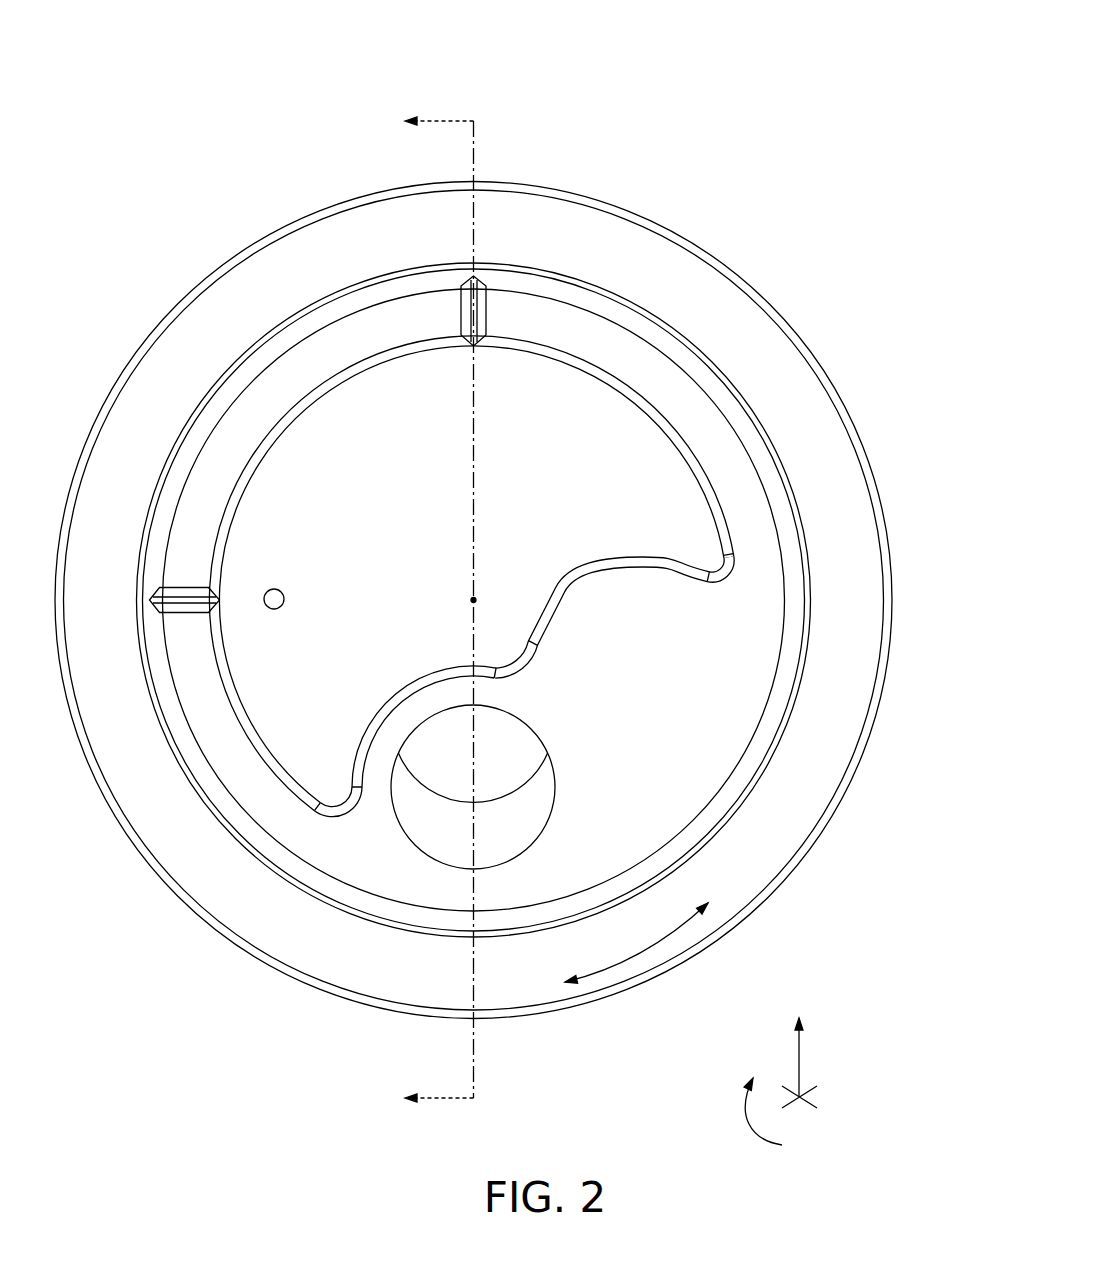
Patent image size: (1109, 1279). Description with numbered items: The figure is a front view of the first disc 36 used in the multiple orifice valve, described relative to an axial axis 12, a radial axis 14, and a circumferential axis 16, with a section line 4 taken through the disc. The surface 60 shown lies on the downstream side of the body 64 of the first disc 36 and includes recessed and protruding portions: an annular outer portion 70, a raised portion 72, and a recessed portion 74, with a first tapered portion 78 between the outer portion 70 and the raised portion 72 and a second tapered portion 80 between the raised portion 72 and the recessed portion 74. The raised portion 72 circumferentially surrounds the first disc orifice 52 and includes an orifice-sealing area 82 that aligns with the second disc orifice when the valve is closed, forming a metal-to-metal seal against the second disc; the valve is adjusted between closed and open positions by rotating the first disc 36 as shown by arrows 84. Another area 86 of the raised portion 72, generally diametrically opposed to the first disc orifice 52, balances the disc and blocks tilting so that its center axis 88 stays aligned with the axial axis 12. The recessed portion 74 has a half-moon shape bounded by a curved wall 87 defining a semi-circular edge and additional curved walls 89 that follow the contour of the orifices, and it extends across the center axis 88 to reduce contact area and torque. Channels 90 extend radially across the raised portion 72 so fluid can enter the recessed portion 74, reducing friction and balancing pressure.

The section line 4- 4 is at (427, 611).
The axial axis 12 is at (812, 1107).
The radial axis 14 is at (800, 1062).
The circumferential axis 16 is at (747, 1128).
The first disc 36 is at (778, 55).
The first disc orifice 52 is at (473, 787).
The surface 60 is at (748, 117).
The body 64 is at (768, 302).
The outer portion 70 is at (822, 407).
The raised portion 72 is at (750, 646).
The recessed portion 74 is at (684, 478).
The first tapered portion 78 is at (747, 423).
The second tapered portion 80 is at (624, 560).
The area 82 is at (632, 671).
The arrows 84 is at (642, 953).
The area 86 is at (474, 600).
The curved wall 87 is at (293, 421).
The center axis 88 is at (472, 599).
The additional curved walls 89 is at (562, 590).
The channels 90 is at (480, 287).